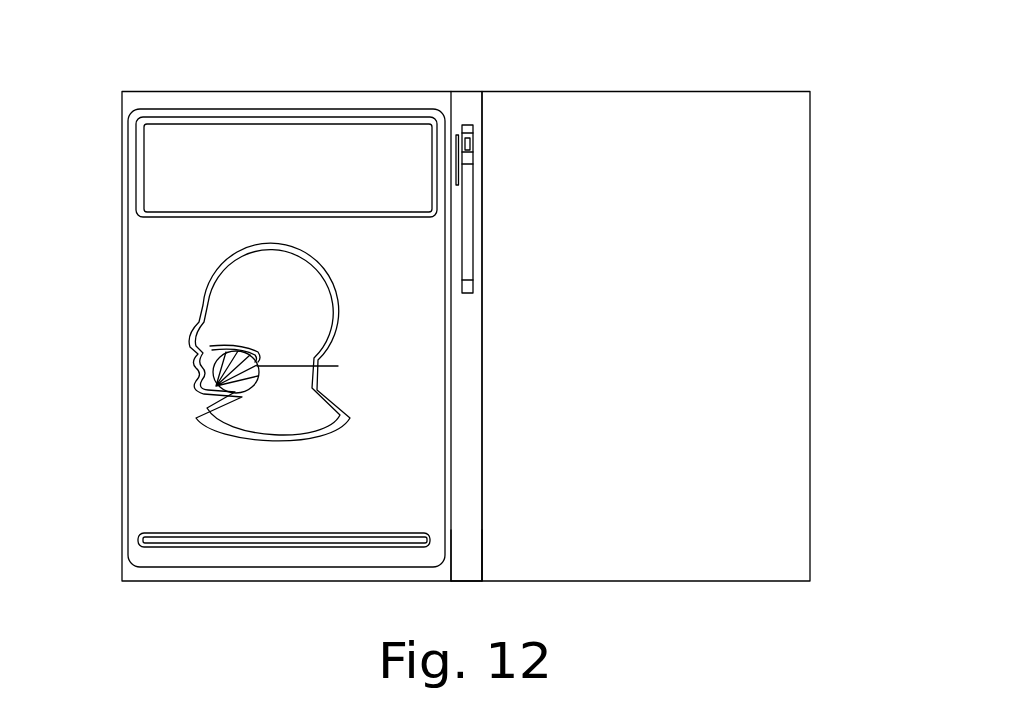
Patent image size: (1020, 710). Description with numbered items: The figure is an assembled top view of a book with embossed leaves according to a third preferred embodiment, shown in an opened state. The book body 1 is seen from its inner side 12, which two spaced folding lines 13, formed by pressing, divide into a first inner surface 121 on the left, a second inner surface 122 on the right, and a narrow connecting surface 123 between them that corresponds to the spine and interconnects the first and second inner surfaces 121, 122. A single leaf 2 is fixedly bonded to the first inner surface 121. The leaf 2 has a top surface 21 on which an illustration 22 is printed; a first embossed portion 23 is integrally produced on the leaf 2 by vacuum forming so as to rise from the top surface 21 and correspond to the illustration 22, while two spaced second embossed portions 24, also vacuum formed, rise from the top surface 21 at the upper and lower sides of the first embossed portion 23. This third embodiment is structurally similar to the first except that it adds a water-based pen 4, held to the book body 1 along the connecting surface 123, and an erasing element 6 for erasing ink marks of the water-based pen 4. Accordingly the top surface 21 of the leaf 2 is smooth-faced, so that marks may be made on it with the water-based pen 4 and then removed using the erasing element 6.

The book body 1 is at (152, 598).
The inner side 12 is at (757, 392).
The first inner surface 121 is at (252, 103).
The second inner surface 122 is at (738, 223).
The connecting surface 123 is at (467, 113).
The folding lines 13 is at (449, 557).
The leaf 2 is at (167, 435).
The top surface 21 is at (413, 252).
The illustration 22 is at (252, 318).
The first embossed portion 23 is at (215, 283).
The second embossed portions 24 is at (148, 182).
The water-based pen 4 is at (463, 223).
The erasing element 6 is at (468, 122).